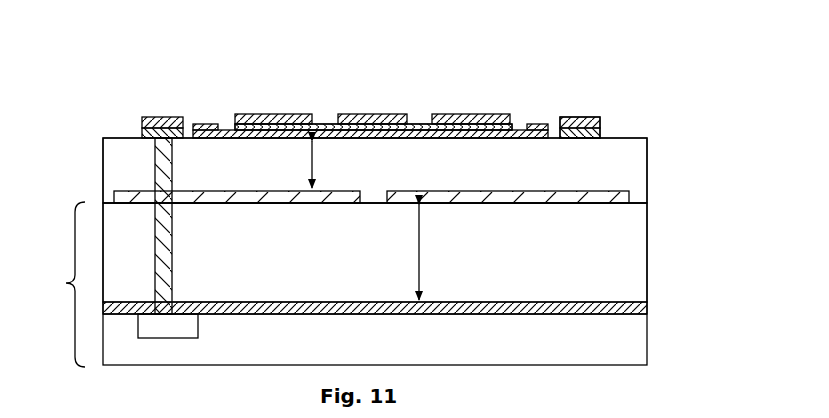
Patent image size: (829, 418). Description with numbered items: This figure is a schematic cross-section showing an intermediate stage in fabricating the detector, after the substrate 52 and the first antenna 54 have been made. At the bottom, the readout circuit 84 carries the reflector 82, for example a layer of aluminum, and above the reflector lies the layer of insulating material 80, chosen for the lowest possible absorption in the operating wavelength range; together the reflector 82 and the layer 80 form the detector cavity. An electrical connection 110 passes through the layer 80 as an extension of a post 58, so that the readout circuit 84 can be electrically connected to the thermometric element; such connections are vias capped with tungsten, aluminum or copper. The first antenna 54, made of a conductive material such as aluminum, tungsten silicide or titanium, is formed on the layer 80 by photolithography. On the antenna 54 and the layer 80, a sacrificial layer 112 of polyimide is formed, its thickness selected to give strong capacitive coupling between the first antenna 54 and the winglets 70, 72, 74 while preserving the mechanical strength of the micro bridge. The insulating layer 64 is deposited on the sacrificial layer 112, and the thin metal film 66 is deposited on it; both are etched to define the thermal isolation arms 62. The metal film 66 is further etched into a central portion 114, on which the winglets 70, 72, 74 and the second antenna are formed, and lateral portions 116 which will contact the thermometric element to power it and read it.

The substrate 52 is at (59, 284).
The first antenna 54 is at (606, 207).
The post 58 is at (157, 159).
The thermal isolation arm 62 is at (580, 112).
The insulating layer 64 is at (227, 121).
The thin metal film 66 is at (422, 122).
The winglet 70 is at (283, 120).
The winglet 72 is at (357, 115).
The winglet 74 is at (473, 117).
The insulating material layer 80 is at (612, 273).
The reflector 82 is at (640, 310).
The readout circuit 84 is at (622, 348).
The electrical connection 110 is at (163, 255).
The sacrificial layer 112 is at (622, 162).
The central portion 114 is at (484, 133).
The lateral portion 116 is at (208, 123).